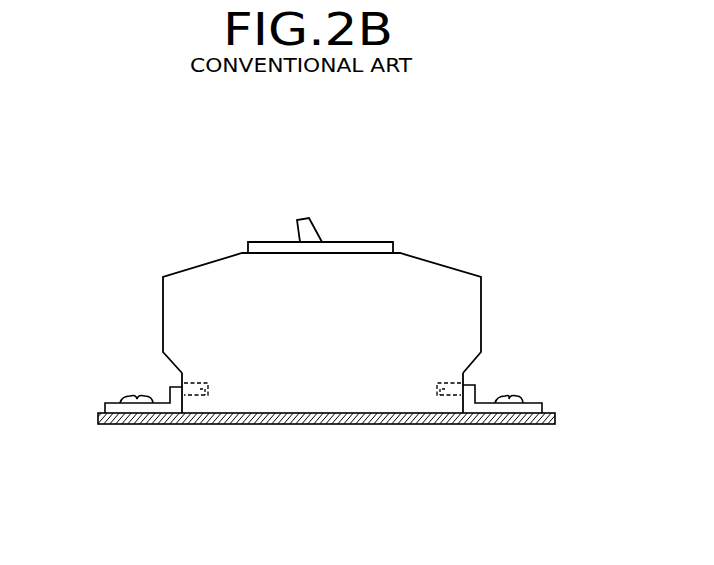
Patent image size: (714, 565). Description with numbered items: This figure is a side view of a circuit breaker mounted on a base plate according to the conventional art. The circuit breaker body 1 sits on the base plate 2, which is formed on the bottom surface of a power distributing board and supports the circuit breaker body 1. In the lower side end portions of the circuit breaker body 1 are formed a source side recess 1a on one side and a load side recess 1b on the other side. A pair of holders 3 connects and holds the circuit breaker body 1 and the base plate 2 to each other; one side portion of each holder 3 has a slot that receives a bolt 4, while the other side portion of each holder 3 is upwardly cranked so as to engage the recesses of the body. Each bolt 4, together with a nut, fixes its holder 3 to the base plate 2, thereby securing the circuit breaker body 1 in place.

The circuit breaker body 1 is at (390, 268).
The source side recess 1a is at (182, 384).
The load side recess 1b is at (467, 383).
The base plate 2 is at (557, 418).
The holder 3 is at (112, 406).
The bolt 4 is at (132, 398).